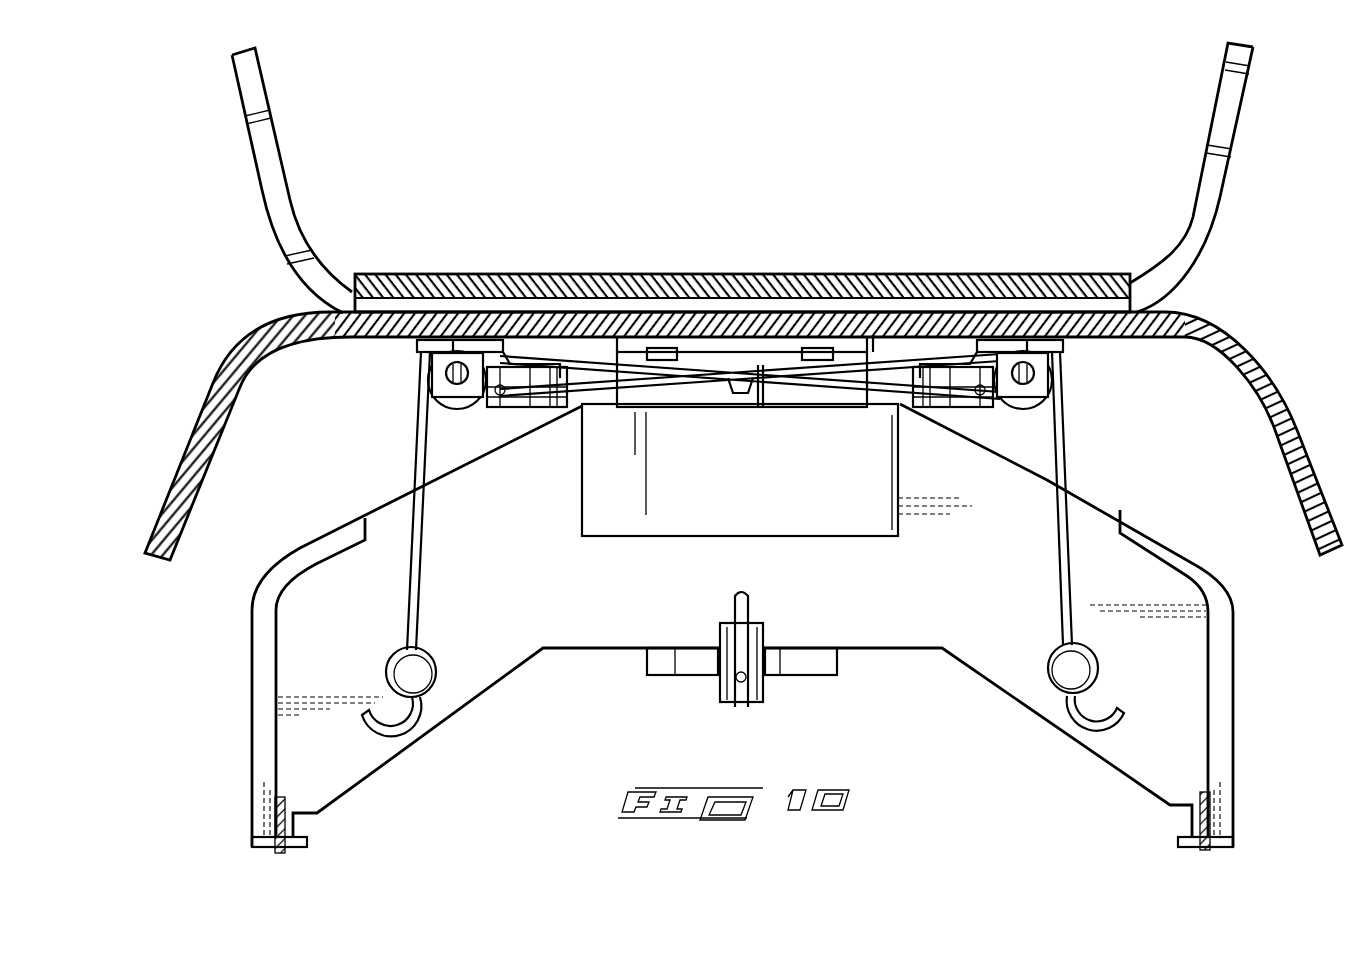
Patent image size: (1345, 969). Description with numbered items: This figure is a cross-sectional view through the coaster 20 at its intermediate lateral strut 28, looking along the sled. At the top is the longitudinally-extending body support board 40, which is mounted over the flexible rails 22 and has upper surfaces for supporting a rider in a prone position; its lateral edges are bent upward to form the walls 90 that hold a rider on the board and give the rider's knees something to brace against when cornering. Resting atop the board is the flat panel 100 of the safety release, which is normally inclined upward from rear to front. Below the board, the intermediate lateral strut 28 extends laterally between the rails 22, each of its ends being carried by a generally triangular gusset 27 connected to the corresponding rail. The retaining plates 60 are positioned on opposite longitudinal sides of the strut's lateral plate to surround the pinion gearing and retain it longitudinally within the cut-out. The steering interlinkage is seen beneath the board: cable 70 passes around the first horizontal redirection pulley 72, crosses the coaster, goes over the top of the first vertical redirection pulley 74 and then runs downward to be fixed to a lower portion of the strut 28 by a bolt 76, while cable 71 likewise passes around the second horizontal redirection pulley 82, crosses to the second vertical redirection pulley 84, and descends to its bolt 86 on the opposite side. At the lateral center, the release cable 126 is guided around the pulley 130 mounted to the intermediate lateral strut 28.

The coaster 20 is at (621, 170).
The flexible rails 22 is at (293, 848).
The gussets 27 is at (262, 668).
The intermediate lateral strut 28 is at (473, 633).
The body support board 40 is at (251, 335).
The retaining plates 60 is at (757, 488).
The cable 70 is at (1055, 540).
The cable 71 is at (428, 547).
The first horizontal redirection pulley 72 is at (517, 402).
The first vertical redirection pulley 74 is at (1018, 401).
The bolt 76 is at (1073, 670).
The second horizontal redirection pulley 82 is at (945, 402).
The second vertical redirection pulley 84 is at (461, 403).
The bolt 86 is at (407, 673).
The upwardly extending walls 90 is at (273, 187).
The flat panel 100 is at (930, 287).
The cable 126 is at (733, 600).
The pulley 130 is at (766, 690).